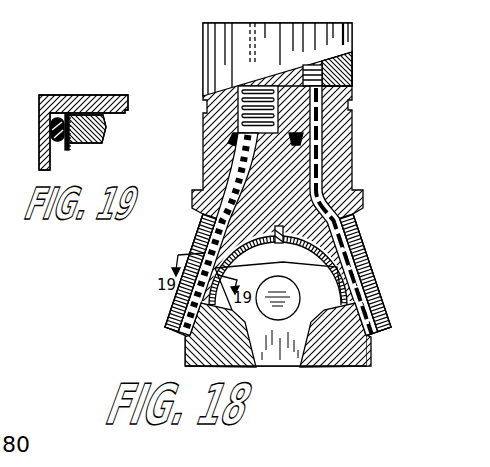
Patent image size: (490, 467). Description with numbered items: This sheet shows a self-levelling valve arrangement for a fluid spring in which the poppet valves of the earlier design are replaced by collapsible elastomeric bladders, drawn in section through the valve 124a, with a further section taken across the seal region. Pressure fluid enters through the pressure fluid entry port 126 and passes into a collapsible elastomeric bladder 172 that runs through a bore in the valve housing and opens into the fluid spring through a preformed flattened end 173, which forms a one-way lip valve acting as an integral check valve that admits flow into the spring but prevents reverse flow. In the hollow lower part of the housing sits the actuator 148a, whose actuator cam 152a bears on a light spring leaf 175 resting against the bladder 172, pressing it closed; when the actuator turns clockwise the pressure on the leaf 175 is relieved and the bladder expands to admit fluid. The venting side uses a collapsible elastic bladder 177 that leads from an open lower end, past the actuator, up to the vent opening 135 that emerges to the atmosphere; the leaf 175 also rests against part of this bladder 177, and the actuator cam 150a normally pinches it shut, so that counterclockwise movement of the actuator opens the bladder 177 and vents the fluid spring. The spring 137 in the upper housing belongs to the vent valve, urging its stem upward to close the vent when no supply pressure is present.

In FIG. 18, the valve 124a is at (356, 164).
In FIG. 19, the valve 124a is at (65, 95).
In FIG. 18, the vent opening 135 is at (253, 21).
In FIG. 18, the pressure fluid entry port 126 is at (333, 76).
In FIG. 18, the spring 137 is at (237, 108).
In FIG. 18, the collapsible elastic bladder 177 is at (207, 232).
In FIG. 19, the collapsible elastic bladder 177 is at (48, 140).
In FIG. 18, the collapsible elastomeric bladder 172 is at (318, 140).
In FIG. 18, the actuator cam 150a is at (208, 297).
In FIG. 19, the actuator cam 150a is at (97, 147).
In FIG. 18, the light spring leaf 175 is at (350, 251).
In FIG. 19, the light spring leaf 175 is at (68, 151).
In FIG. 18, the actuator cam 152a is at (360, 277).
In FIG. 18, the actuator 148a is at (307, 258).
In FIG. 18, the preformed flattened end 173 is at (380, 333).